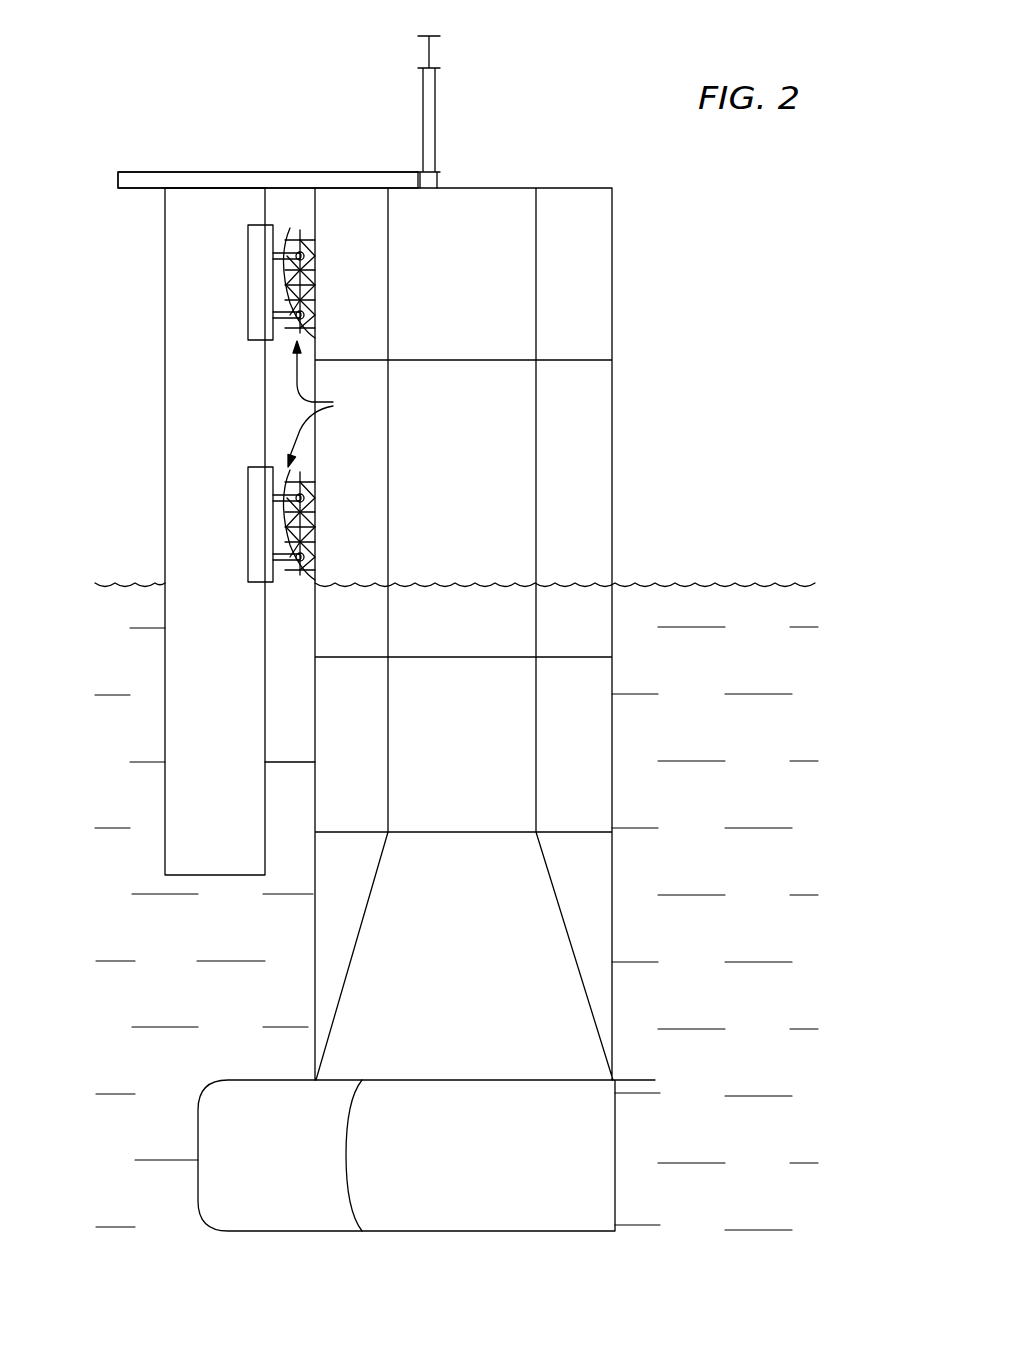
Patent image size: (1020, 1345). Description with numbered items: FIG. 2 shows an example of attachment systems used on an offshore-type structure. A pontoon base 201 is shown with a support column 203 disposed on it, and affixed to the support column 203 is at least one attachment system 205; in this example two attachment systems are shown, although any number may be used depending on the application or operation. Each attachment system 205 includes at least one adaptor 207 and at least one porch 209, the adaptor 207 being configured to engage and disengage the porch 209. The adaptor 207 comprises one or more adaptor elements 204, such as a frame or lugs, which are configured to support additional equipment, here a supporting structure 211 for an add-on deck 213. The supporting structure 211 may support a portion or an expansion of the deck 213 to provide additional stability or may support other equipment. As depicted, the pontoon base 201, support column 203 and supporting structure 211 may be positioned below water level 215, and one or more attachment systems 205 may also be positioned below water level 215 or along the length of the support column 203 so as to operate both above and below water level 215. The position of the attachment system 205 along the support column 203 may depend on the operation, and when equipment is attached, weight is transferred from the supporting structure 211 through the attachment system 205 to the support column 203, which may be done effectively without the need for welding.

The pontoon base 201 is at (280, 1170).
The support column 203 is at (480, 749).
The adaptor elements 204 is at (278, 228).
The attachment system 205 is at (329, 404).
The adaptor 207 is at (258, 514).
The porch 209 is at (313, 518).
The supporting structure 211 is at (228, 429).
The add-on deck 213 is at (130, 172).
The water level 215 is at (665, 585).